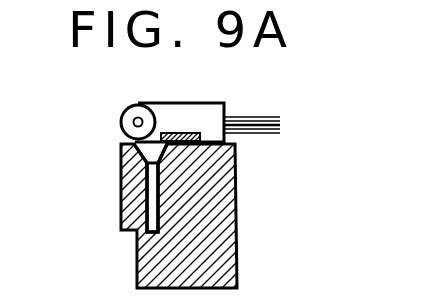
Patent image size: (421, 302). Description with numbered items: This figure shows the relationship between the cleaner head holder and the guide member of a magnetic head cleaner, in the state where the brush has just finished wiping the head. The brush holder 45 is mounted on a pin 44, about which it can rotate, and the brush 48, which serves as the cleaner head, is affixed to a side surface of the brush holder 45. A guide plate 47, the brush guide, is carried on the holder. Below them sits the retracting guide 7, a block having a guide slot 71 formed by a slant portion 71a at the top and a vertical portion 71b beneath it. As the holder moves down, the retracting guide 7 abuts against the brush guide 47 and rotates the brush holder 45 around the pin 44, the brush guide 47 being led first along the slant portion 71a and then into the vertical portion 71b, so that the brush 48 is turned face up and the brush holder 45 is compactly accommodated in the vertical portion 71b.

The retracting guide 7 is at (220, 265).
The guide slot 71 is at (62, 144).
The slant portion 71a is at (158, 156).
The vertical portion 71b is at (158, 205).
The pin 44 is at (133, 122).
The brush holder 45 is at (205, 106).
The guide plate 47 is at (171, 133).
The brush 48 is at (259, 123).